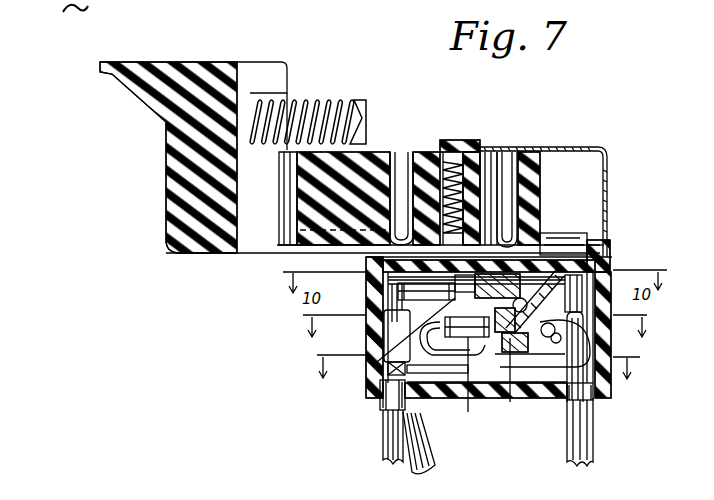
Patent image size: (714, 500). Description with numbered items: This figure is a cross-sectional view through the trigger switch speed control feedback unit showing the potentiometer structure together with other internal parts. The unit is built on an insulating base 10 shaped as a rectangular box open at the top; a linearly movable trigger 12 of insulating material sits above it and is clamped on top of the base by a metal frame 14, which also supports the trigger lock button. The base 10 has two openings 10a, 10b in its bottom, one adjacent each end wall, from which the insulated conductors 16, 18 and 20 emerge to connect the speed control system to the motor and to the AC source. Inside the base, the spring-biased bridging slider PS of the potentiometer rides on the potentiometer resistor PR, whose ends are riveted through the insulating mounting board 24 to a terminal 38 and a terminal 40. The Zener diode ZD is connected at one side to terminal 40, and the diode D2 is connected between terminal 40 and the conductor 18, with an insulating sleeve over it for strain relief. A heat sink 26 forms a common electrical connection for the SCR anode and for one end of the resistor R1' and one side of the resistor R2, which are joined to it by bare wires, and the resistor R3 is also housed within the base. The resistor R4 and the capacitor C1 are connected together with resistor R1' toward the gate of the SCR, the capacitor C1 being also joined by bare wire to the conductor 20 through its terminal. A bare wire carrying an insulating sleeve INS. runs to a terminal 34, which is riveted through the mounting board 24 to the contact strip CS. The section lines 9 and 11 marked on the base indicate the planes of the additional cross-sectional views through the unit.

The trigger 12 is at (257, 62).
The bridging slider PS is at (393, 238).
The potentiometer resistor PR is at (415, 240).
The resistor R2 is at (507, 165).
The metal frame 14 is at (560, 150).
The resistor R3 is at (543, 253).
The contact strip CS is at (560, 253).
The resistor R1' is at (565, 225).
The terminal 34 is at (590, 250).
The mounting board 24 is at (608, 262).
The section line 11- 11 is at (476, 273).
The insulating base 10 is at (483, 398).
The section line 9- 9 is at (478, 354).
The terminal 40 is at (398, 287).
The terminal 38 is at (392, 305).
The Zener diode ZD is at (384, 323).
The diode D2 is at (390, 338).
The resistor R4 is at (388, 370).
The capacitor C1 is at (446, 369).
The heat sink 26 is at (556, 398).
The insulated conductor 20 is at (605, 285).
The insulated conductor 18 is at (384, 438).
The insulated conductor 16 is at (423, 445).
The opening 10a is at (406, 398).
The opening 10b is at (596, 398).
The insulating sleeve INS. is at (382, 403).